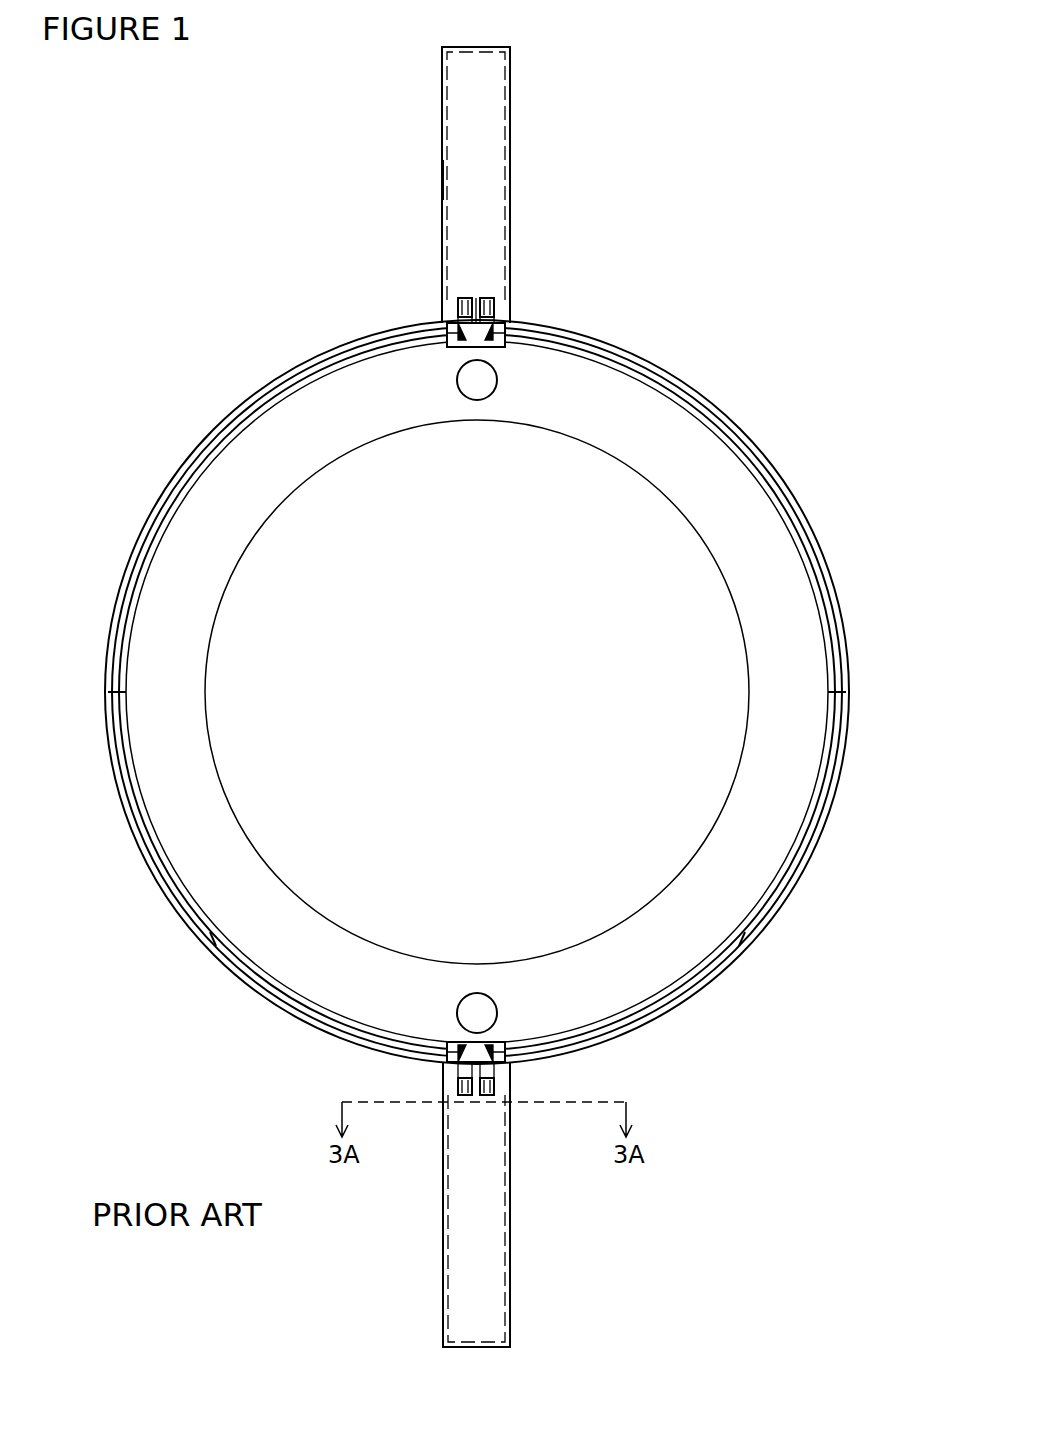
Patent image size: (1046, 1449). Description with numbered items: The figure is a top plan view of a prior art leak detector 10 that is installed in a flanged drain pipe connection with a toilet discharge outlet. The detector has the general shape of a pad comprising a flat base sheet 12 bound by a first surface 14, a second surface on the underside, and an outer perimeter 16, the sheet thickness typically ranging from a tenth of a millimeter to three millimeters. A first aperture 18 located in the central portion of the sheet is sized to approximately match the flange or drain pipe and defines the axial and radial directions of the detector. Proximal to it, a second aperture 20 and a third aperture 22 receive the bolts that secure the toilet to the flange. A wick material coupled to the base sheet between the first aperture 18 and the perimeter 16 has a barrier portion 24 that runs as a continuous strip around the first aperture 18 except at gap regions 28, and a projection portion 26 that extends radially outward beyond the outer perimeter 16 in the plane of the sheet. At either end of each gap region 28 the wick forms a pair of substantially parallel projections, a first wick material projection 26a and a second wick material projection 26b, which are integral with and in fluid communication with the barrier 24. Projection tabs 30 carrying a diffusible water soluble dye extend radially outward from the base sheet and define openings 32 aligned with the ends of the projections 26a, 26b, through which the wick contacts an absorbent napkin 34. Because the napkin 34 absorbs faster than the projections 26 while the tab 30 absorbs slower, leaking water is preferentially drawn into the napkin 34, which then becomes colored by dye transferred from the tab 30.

The leak detector 10 is at (737, 232).
The base sheet 12 is at (477, 692).
The first surface 14 is at (713, 460).
The outer perimeter 16 is at (672, 378).
The first aperture 18 is at (477, 692).
The second aperture 20 is at (478, 388).
The third aperture 22 is at (472, 1000).
The wick material barrier 24 is at (148, 873).
The wick material projection 26 is at (483, 264).
The first wick material projection 26a is at (460, 295).
The second wick material projection 26b is at (490, 295).
The gap region 28 is at (470, 340).
The projection tab 30 is at (462, 105).
The opening 32 is at (495, 322).
The absorbent napkin 34 is at (450, 183).